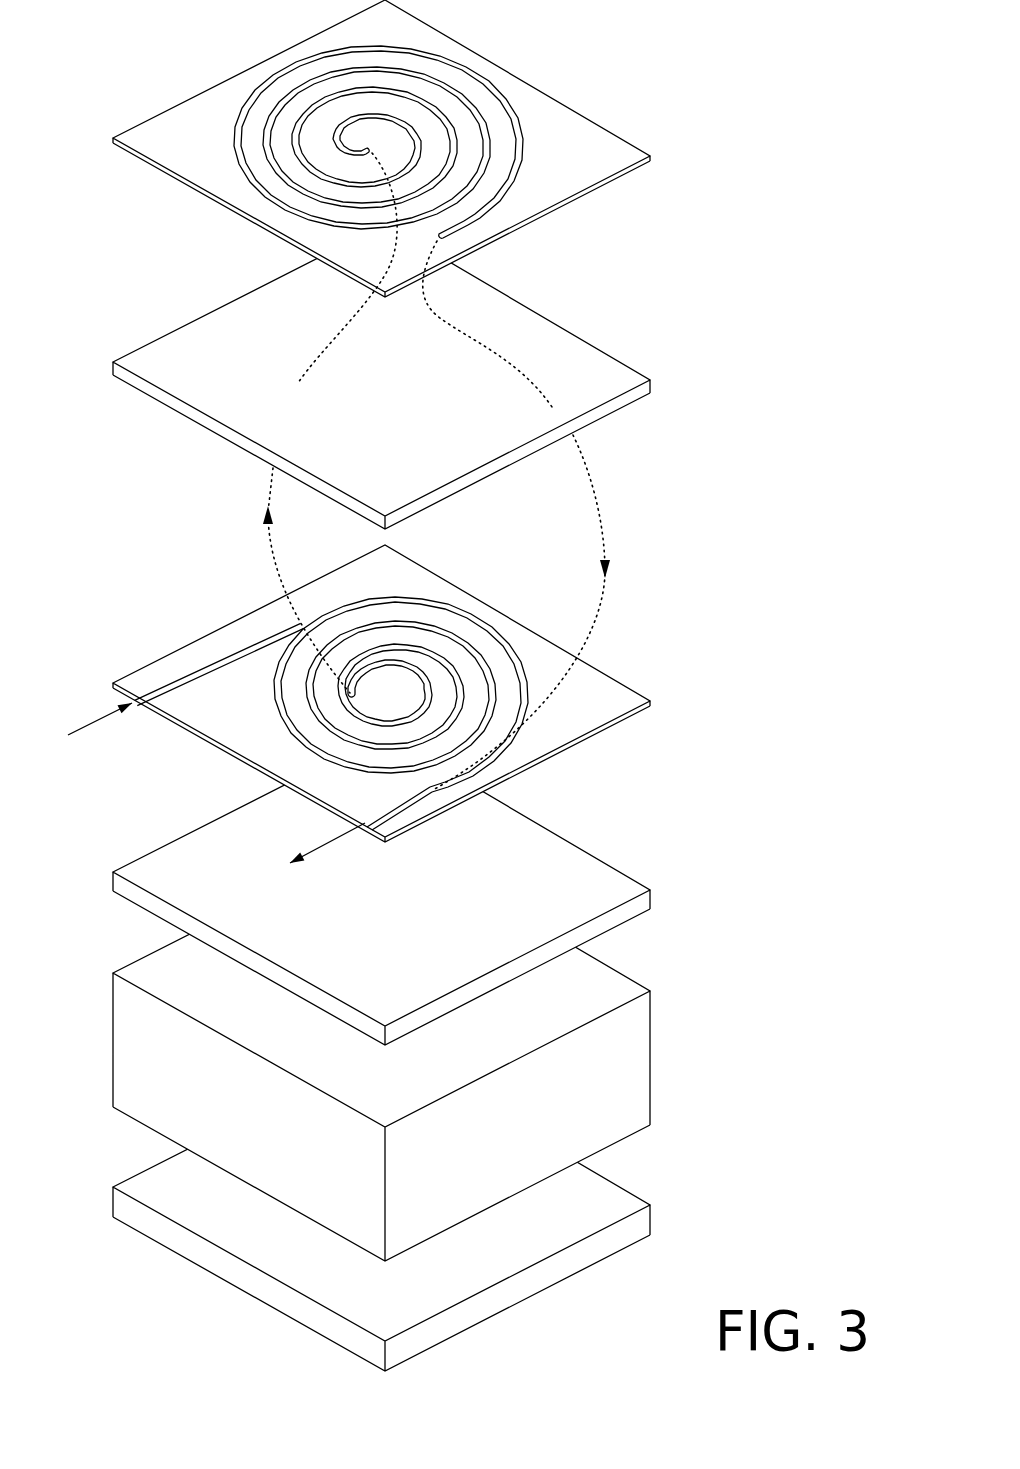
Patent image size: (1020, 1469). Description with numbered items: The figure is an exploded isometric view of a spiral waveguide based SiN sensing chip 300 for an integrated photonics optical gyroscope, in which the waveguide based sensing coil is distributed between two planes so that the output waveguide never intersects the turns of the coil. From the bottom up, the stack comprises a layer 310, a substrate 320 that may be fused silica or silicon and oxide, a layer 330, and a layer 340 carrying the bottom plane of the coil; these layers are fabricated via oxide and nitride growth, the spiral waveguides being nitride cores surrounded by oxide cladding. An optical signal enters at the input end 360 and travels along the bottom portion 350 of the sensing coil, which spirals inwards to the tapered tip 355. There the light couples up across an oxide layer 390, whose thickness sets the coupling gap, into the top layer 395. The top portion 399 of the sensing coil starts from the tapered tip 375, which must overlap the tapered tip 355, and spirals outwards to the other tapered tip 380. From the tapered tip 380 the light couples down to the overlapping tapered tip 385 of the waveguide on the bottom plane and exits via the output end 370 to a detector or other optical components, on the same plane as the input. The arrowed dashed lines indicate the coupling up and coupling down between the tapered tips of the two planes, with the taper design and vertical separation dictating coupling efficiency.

The spiral waveguide based SiN sensing chip 300 is at (443, 685).
The layer 310 is at (137, 1172).
The substrate 320 is at (137, 960).
The layer 330 is at (137, 859).
The layer 340 is at (137, 670).
The bottom portion of waveguide based sensing coil 350 is at (507, 641).
The tapered tip 355 is at (381, 677).
The input end of the sensing coil 360 is at (103, 718).
The output end 370 is at (333, 845).
The tapered tip 375 is at (370, 146).
The tapered tip 380 is at (448, 250).
The tapered tip 385 is at (463, 793).
The layer 390 is at (137, 350).
The top layer 395 is at (137, 124).
The top portion of waveguide based sensing coil 399 is at (510, 103).